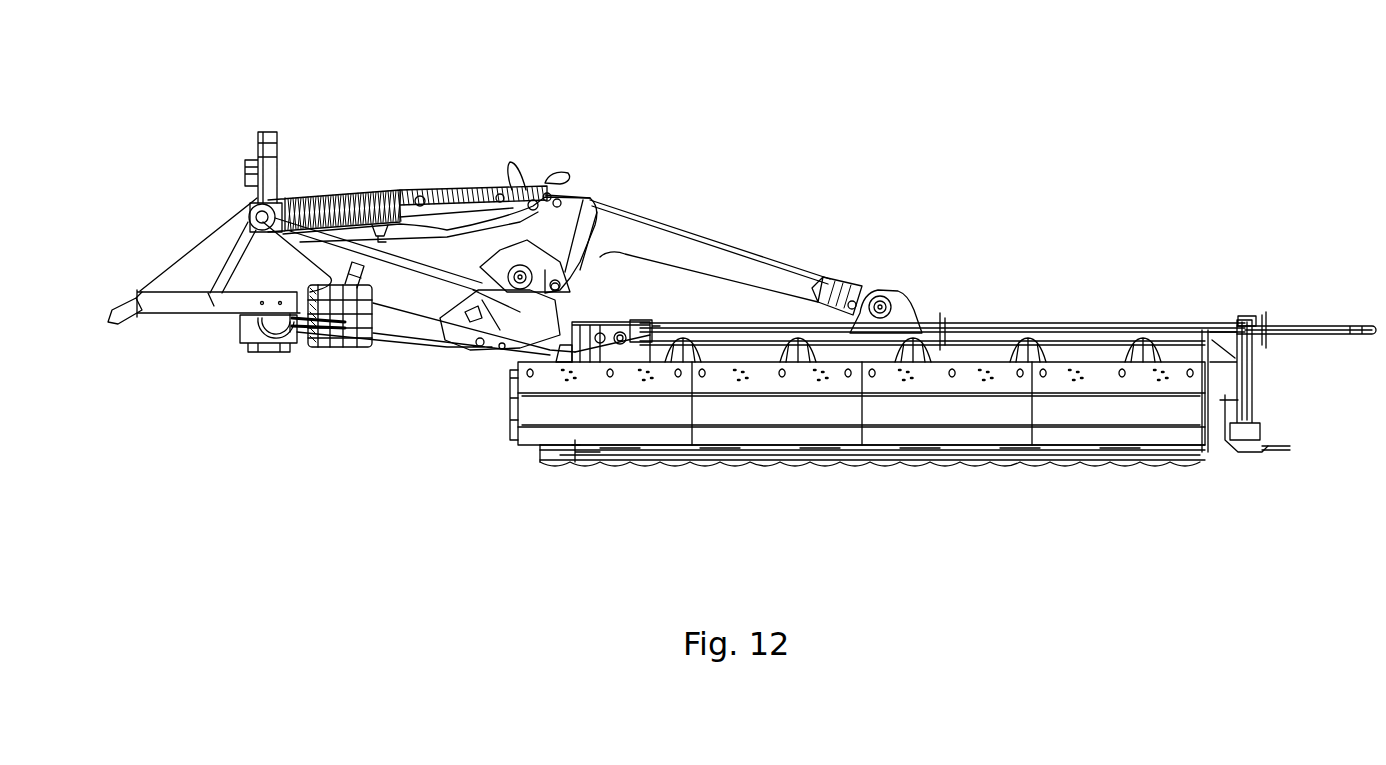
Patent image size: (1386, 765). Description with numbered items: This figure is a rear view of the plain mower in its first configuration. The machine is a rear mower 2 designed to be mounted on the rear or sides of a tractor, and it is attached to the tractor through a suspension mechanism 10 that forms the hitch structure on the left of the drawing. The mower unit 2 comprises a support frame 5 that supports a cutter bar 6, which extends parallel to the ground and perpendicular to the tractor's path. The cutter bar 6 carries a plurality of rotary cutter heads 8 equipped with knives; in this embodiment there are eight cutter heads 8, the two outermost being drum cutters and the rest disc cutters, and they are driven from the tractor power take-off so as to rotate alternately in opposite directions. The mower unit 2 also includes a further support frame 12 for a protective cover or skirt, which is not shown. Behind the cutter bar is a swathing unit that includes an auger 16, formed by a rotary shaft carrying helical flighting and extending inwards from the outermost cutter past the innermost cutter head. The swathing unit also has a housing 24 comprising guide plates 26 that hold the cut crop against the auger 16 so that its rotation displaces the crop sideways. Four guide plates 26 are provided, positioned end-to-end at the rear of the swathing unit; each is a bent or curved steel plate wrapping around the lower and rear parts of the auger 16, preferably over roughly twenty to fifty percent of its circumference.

The suspension mechanism 10 is at (425, 124).
The rear mower 2 is at (1167, 233).
The support frame 5 is at (1010, 337).
The auger 16 is at (1153, 350).
The support frame 12 is at (1324, 326).
The housing 24 is at (506, 463).
The guide plates 26 is at (651, 416).
The cutter bar 6 is at (745, 475).
The rotary cutter heads 8 is at (948, 478).